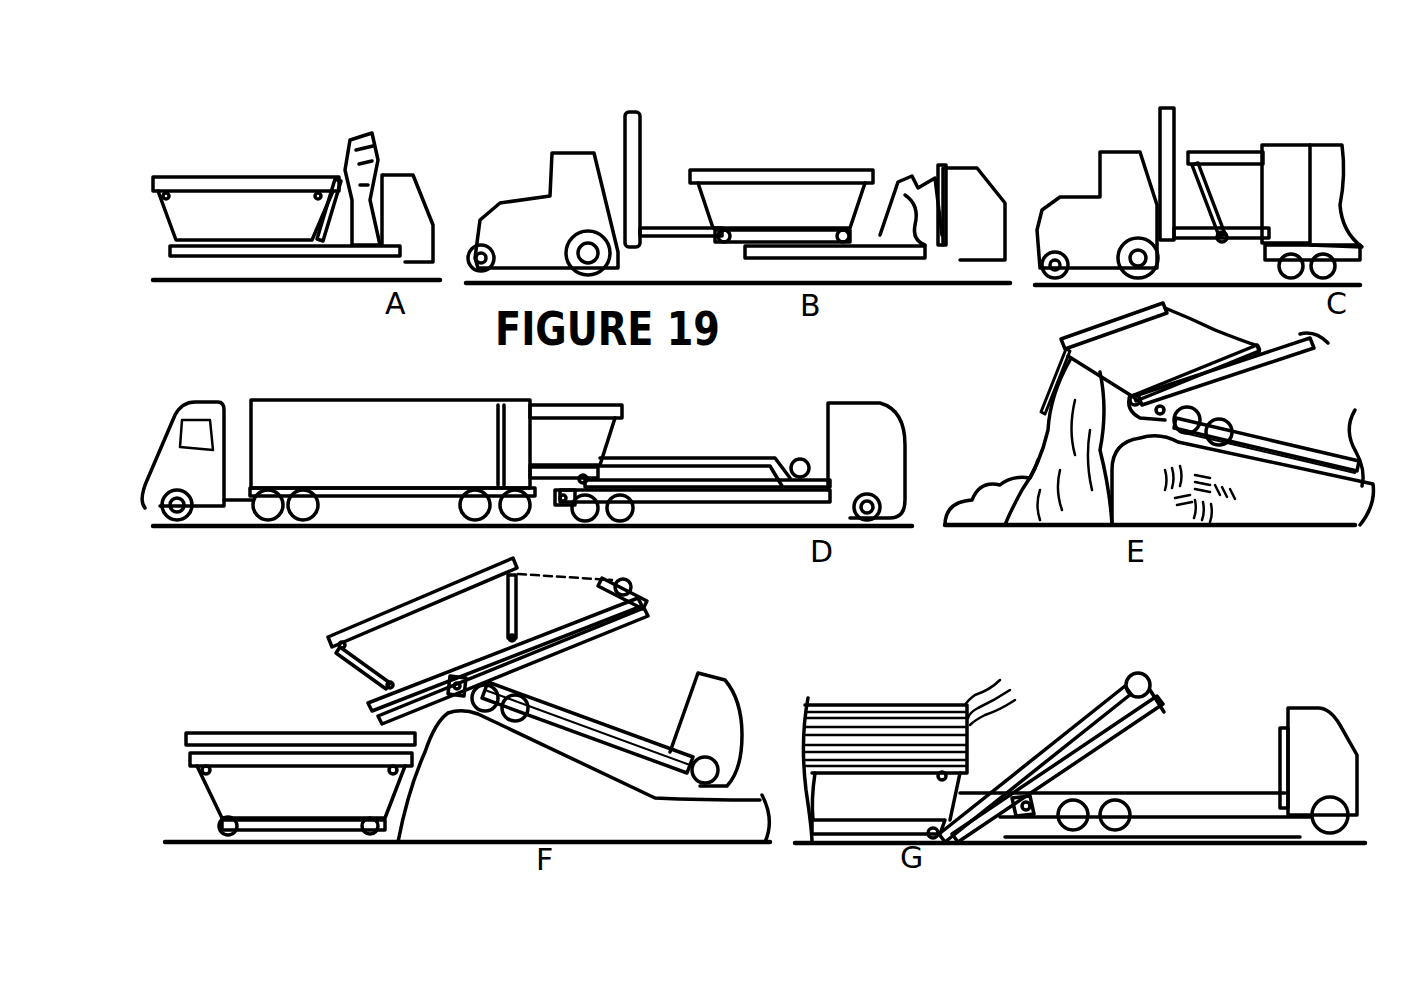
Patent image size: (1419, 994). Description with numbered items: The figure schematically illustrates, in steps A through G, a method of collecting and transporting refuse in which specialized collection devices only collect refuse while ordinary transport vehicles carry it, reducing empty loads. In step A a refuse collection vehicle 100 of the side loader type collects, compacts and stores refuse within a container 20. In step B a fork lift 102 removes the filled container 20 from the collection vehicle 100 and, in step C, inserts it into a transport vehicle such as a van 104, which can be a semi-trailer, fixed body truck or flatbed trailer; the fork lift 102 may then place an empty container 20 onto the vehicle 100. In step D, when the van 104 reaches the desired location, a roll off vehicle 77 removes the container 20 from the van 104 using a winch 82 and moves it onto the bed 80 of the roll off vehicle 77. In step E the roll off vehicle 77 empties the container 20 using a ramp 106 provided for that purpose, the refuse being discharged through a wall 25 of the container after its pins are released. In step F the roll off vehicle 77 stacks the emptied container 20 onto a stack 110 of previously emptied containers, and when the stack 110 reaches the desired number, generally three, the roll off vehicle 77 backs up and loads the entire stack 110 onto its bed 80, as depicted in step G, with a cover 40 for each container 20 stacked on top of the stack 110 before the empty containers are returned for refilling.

The container 20 is at (194, 166).
The wall 25 is at (1043, 388).
The cover 40 is at (1003, 689).
The roll off vehicle 77 is at (866, 425).
The bed 80 is at (706, 496).
The winch 82 is at (800, 458).
The refuse collection vehicle 100 is at (410, 192).
The fork lift 102 is at (562, 160).
The van 104 is at (1296, 150).
The ramp 106 is at (1220, 514).
The stack 110 is at (210, 712).